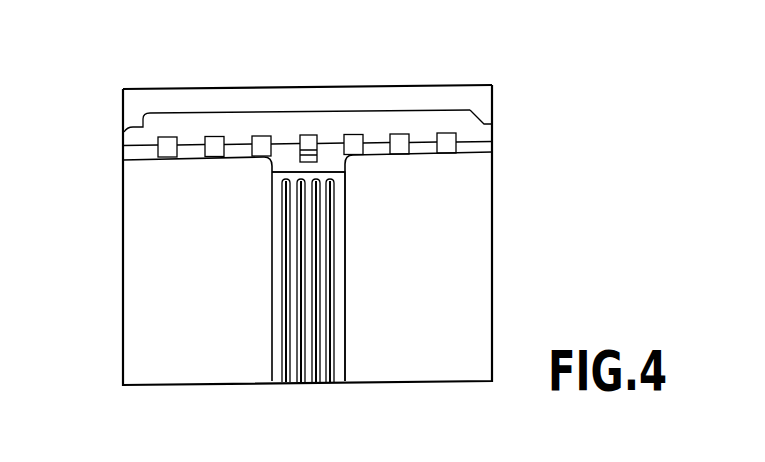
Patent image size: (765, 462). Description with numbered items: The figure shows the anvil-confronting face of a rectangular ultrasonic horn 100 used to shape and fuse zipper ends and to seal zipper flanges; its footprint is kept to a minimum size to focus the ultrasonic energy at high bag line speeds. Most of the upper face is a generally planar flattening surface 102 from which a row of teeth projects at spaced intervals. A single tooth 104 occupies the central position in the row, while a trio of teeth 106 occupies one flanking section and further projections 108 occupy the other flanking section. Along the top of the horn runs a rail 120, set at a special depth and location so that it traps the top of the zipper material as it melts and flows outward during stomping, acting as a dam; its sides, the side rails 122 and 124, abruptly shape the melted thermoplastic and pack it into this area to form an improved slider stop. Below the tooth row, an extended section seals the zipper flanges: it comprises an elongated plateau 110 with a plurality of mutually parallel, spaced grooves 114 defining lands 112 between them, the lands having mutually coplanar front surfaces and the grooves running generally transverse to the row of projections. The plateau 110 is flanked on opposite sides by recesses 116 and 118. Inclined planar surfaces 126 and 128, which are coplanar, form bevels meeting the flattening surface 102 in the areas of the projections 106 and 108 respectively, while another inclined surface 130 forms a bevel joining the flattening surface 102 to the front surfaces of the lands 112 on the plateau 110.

The horn 100 is at (493, 200).
The flattening surface 102 is at (428, 105).
The central tooth 104 is at (309, 135).
The flanking teeth 106 is at (493, 111).
The projections 108 is at (166, 160).
The elongated plateau 110 is at (346, 266).
The lands 112 is at (340, 366).
The grooves 114 is at (290, 368).
The recess 116 is at (455, 347).
The recess 118 is at (155, 328).
The rail (dam) 120 is at (268, 102).
The side rail 122 is at (447, 143).
The side rail 124 is at (124, 133).
The inclined planar surface 126 is at (377, 153).
The inclined planar surface 128 is at (238, 154).
The inclined planar surface 130 is at (265, 178).